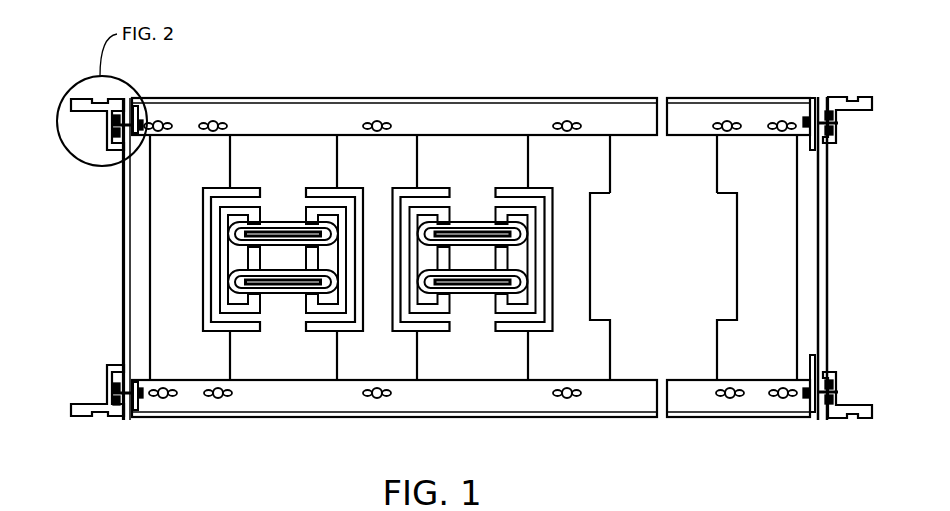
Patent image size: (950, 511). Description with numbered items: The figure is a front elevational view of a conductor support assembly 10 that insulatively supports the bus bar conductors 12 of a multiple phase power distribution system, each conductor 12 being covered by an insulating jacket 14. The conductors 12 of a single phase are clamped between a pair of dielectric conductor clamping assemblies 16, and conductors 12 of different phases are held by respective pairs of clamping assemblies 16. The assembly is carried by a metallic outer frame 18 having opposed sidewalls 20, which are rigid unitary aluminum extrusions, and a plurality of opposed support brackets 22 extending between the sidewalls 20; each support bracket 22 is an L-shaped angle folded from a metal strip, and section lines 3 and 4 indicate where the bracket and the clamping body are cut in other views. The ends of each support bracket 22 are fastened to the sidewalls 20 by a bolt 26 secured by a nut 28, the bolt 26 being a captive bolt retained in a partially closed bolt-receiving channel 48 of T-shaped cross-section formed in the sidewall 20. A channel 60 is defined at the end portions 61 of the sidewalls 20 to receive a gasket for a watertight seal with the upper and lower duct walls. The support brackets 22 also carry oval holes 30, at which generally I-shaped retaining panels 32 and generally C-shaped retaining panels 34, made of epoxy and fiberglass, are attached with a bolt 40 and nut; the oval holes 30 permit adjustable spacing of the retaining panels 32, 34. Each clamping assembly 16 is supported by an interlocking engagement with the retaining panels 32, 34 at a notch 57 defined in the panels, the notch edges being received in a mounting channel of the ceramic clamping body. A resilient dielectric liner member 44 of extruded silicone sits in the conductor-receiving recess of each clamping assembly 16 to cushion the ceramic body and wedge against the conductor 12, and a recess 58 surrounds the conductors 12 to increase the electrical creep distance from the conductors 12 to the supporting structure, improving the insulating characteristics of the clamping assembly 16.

The conductor support assembly 10 is at (498, 85).
The bus bar conductor 12 is at (277, 238).
The insulating jacket 14 is at (283, 228).
The dielectric conductor clamping assembly 16 is at (262, 206).
The metallic outer frame 18 is at (320, 94).
The sidewall 20 is at (122, 238).
The support bracket 22 is at (290, 98).
The bolt 26 is at (112, 125).
The nut 28 is at (137, 107).
The oval hole 30 is at (163, 122).
The I-shaped retaining panel 32 is at (337, 170).
The C-shaped retaining panel 34 is at (230, 175).
The bolt 40 is at (162, 133).
The resilient dielectric liner member 44 is at (240, 270).
The bolt-receiving channel 48 is at (112, 135).
The notch 57 is at (737, 292).
The recess 58 is at (210, 197).
The channel 60 is at (833, 98).
The end portion 61 is at (72, 100).
The section line 3- 3 is at (330, 355).
The section line 4- 4 is at (632, 250).